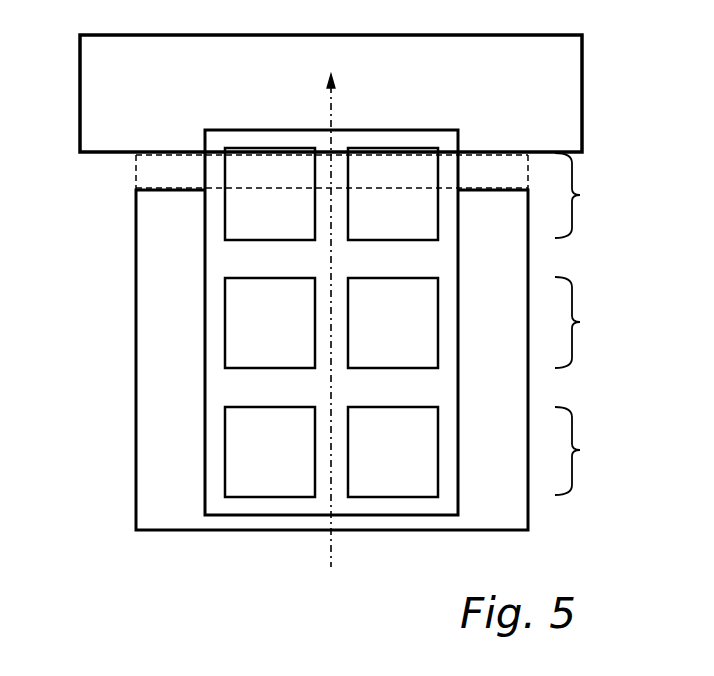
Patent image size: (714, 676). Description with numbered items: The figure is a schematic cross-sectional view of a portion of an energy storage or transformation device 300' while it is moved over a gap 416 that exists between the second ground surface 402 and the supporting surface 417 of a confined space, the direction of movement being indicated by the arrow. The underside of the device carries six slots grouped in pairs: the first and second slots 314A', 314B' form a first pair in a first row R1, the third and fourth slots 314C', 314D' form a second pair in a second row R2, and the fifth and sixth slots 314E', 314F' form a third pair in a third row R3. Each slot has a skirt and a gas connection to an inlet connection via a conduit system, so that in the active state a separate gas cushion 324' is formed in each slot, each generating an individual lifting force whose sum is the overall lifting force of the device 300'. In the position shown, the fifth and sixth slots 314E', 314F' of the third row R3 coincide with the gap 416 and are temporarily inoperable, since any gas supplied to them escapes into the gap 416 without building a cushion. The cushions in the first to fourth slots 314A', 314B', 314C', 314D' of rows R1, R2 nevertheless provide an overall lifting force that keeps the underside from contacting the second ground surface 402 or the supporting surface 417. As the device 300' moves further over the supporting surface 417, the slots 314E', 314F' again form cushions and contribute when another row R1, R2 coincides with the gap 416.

The supporting surface 417 is at (160, 113).
The gap 416 is at (148, 172).
The second ground surface 402 is at (190, 258).
The first slot 314A' is at (270, 452).
The second slot 314B' is at (393, 452).
The third slot 314C' is at (270, 323).
The fourth slot 314D' is at (393, 323).
The fifth slot 314E' is at (270, 194).
The sixth slot 314F' is at (393, 194).
The gas cushion 324' is at (55, 521).
The energy storage or transformation device 300' is at (563, 535).
The first row R1 is at (585, 451).
The second row R2 is at (585, 322).
The third row R3 is at (585, 195).